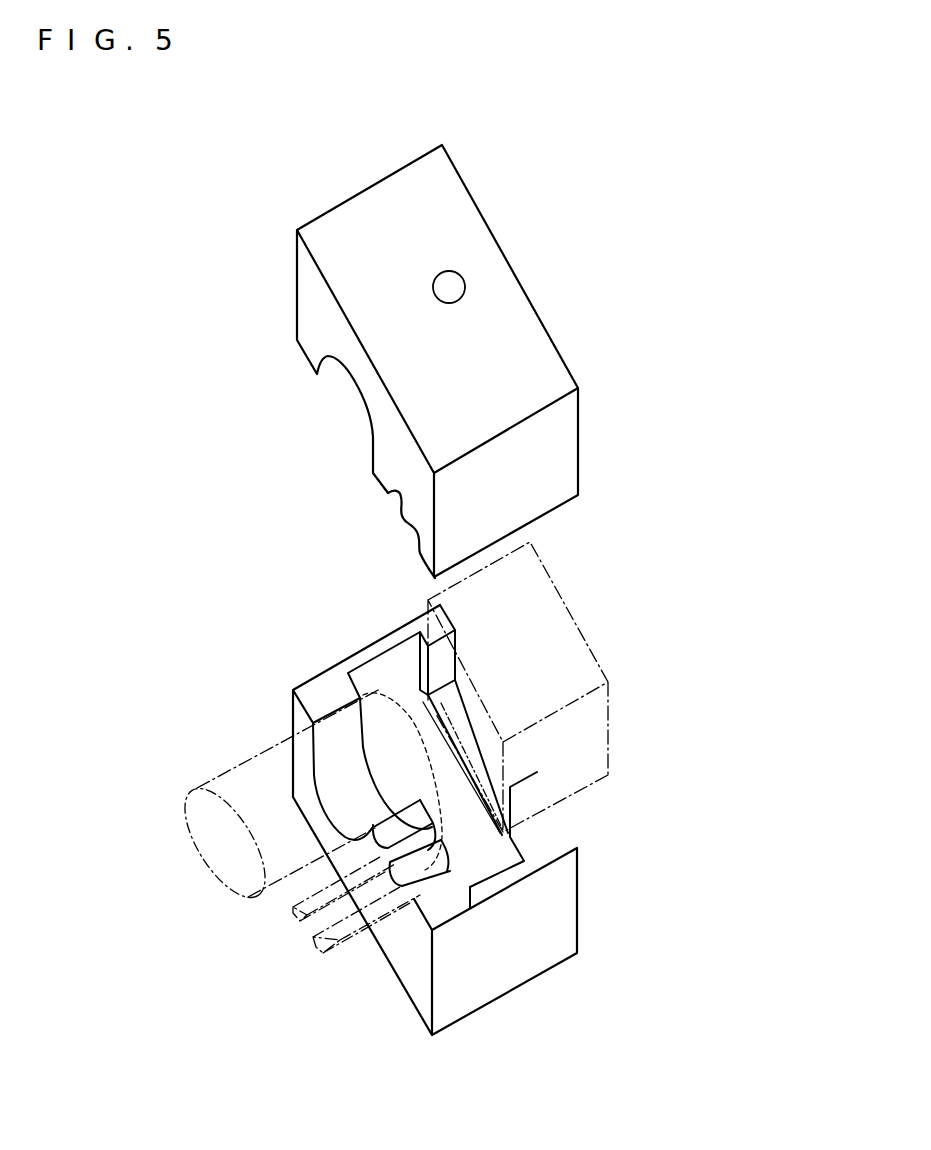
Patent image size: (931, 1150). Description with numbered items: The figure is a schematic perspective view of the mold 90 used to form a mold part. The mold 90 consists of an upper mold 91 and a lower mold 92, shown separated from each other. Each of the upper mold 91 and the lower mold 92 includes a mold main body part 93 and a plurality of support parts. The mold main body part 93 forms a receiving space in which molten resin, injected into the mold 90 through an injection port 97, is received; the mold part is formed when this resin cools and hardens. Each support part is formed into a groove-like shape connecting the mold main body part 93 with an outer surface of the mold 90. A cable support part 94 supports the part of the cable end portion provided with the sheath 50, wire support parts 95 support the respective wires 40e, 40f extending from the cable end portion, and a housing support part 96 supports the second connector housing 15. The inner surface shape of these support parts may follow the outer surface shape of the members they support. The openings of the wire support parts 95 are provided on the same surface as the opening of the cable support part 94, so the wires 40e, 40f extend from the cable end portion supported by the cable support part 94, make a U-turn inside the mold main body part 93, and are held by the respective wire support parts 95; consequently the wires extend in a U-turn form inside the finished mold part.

The mold 90 is at (309, 151).
The upper mold 91 is at (532, 302).
The lower mold 92 is at (469, 840).
The mold main body part 93 is at (488, 866).
The cable support part 94 is at (342, 742).
The wire support parts 95 is at (419, 880).
The housing support part 96 is at (488, 767).
The injection port 97 is at (451, 281).
The second connector housing 15 is at (568, 612).
The sheath 50 is at (228, 771).
The wire 40e is at (342, 940).
The wire 40f is at (312, 925).